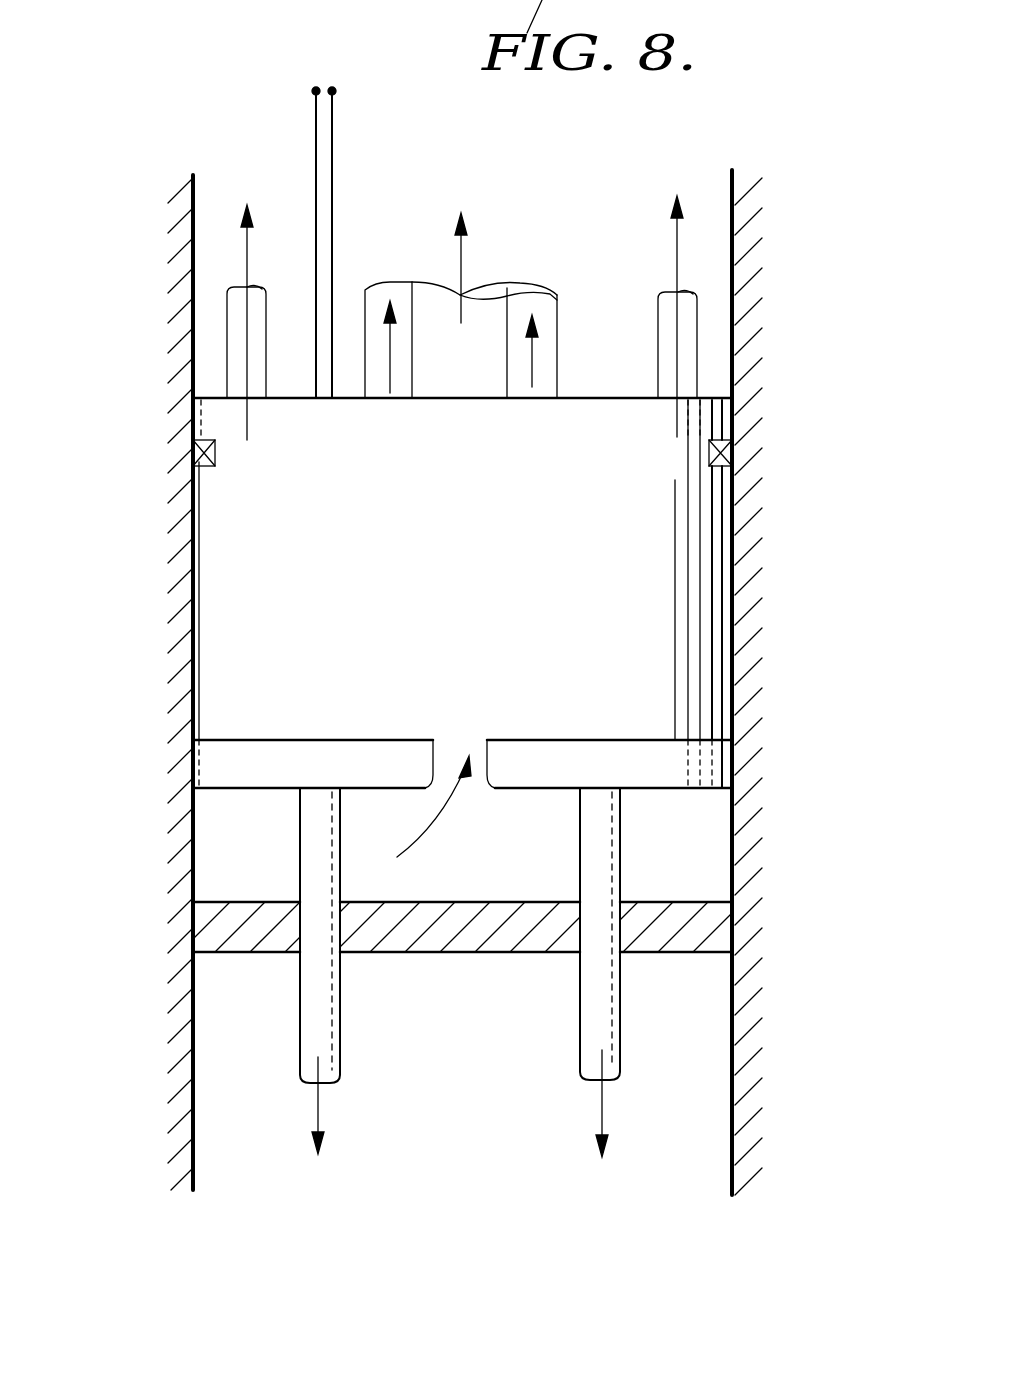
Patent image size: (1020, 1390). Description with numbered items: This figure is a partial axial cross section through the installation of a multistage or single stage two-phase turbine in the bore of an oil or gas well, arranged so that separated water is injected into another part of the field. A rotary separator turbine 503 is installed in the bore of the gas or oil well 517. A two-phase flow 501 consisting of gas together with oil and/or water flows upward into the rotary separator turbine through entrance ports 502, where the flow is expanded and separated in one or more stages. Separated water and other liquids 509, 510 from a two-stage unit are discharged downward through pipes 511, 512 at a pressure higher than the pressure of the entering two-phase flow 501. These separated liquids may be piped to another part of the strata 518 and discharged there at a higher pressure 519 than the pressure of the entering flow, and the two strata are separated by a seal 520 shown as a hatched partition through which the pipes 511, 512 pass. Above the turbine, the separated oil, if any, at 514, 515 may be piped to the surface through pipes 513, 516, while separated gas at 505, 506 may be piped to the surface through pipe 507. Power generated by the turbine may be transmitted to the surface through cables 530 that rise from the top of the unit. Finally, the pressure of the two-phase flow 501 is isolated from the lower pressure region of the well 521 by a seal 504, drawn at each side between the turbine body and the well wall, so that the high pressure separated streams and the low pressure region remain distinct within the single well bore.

The two-phase flow 501 is at (433, 840).
The entrance ports 502 is at (478, 750).
The rotary separator turbine 503 is at (462, 593).
The seal 504 is at (733, 455).
The separated gas 505 is at (428, 300).
The separated gas 506 is at (540, 305).
The gas pipe to surface 507 is at (557, 325).
The separated water and other liquids 509 is at (317, 1097).
The separated water and other liquids 510 is at (605, 1093).
The discharge pipe 511 is at (310, 992).
The discharge pipe 512 is at (605, 848).
The oil pipe to surface 513 is at (227, 323).
The separated oil 514 is at (245, 273).
The separated oil 515 is at (677, 265).
The oil pipe to surface 516 is at (697, 352).
The gas or oil well 517 is at (446, 1134).
The strata 518 is at (190, 1200).
The higher pressure discharge 519 is at (543, 1183).
The seal 520 is at (698, 930).
The lower pressure region of the well 521 is at (205, 210).
The cables 530 is at (332, 150).